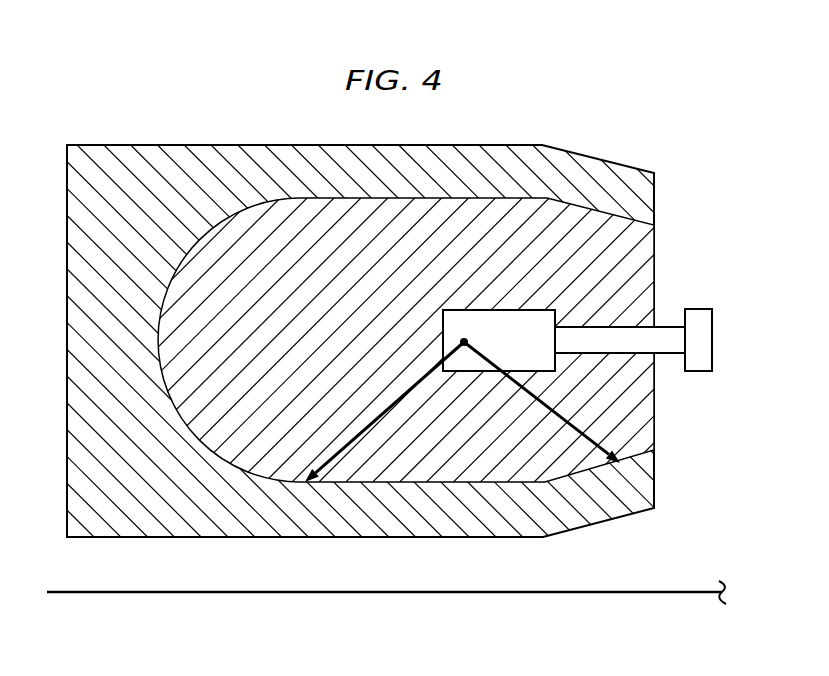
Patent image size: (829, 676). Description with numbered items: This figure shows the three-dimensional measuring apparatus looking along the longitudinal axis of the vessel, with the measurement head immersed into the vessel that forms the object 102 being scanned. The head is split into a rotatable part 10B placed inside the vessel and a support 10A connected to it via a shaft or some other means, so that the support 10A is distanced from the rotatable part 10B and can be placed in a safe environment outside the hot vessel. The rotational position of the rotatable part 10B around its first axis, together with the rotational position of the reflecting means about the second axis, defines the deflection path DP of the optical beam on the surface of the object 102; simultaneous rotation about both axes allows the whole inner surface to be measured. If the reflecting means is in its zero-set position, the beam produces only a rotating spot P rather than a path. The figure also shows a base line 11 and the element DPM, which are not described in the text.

The deformable plate member DPM is at (646, 274).
The object 102 is at (414, 340).
The support 10A is at (713, 340).
The rotatable part 10B is at (498, 310).
The spot P is at (153, 352).
The deflection path DP is at (305, 365).
The substrate 11 is at (205, 592).